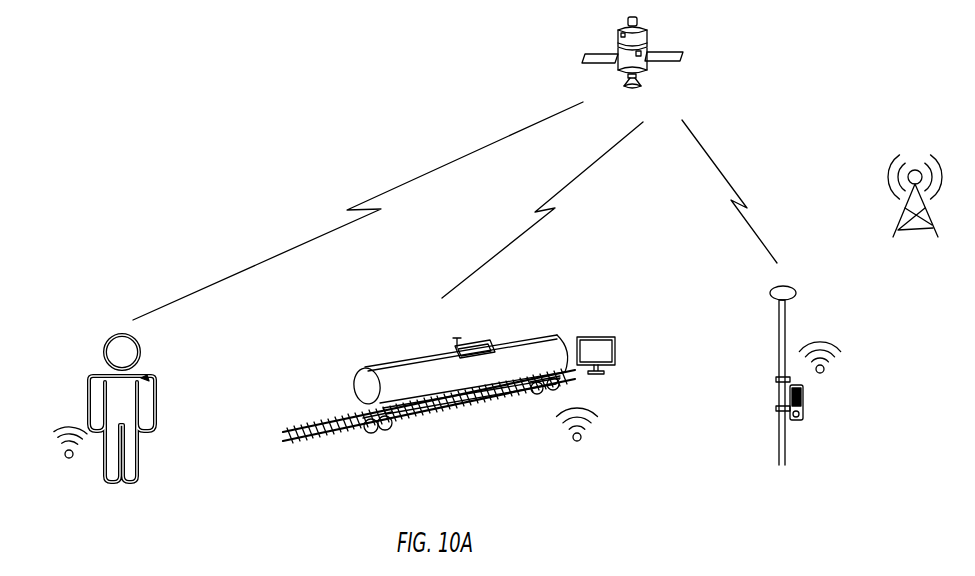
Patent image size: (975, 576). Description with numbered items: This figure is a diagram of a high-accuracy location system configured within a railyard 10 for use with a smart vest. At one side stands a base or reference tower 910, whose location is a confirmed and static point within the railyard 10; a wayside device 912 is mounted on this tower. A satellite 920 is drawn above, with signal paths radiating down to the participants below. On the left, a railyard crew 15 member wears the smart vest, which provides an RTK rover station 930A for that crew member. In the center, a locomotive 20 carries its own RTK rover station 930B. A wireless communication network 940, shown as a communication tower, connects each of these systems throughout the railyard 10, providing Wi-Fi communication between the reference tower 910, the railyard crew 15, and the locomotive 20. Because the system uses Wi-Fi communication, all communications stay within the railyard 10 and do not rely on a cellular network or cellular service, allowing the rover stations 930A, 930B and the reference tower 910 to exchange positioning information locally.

The railyard 10 is at (303, 444).
The railyard crew 15 is at (146, 378).
The locomotive 20 is at (395, 381).
The reference tower 910 is at (781, 448).
The wayside communication device 912 is at (802, 386).
The satellite 920 is at (647, 45).
The RTK rover station 930A is at (104, 382).
The RTK rover station 930B is at (483, 370).
The wireless communication network 940 is at (908, 210).